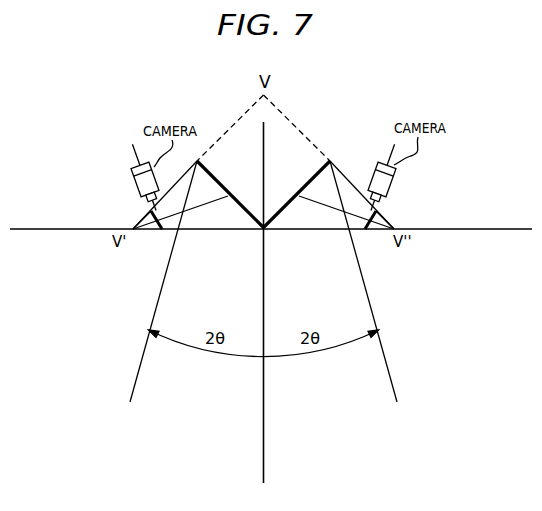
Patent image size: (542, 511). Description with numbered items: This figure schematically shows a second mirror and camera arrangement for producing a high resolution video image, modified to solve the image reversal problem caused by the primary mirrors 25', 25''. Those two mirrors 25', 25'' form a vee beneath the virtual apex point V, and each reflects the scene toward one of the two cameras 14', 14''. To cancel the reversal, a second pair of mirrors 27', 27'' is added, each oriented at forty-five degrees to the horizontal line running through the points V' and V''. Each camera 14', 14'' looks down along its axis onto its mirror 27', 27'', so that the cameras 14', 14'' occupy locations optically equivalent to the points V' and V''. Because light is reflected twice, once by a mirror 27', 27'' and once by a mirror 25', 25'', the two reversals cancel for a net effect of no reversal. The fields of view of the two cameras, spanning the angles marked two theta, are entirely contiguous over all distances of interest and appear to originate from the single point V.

The camera 14' is at (129, 177).
The camera 14'' is at (372, 172).
The mirror 25' is at (230, 192).
The mirror 25'' is at (297, 192).
The mirror 27' is at (147, 242).
The mirror 27'' is at (377, 242).